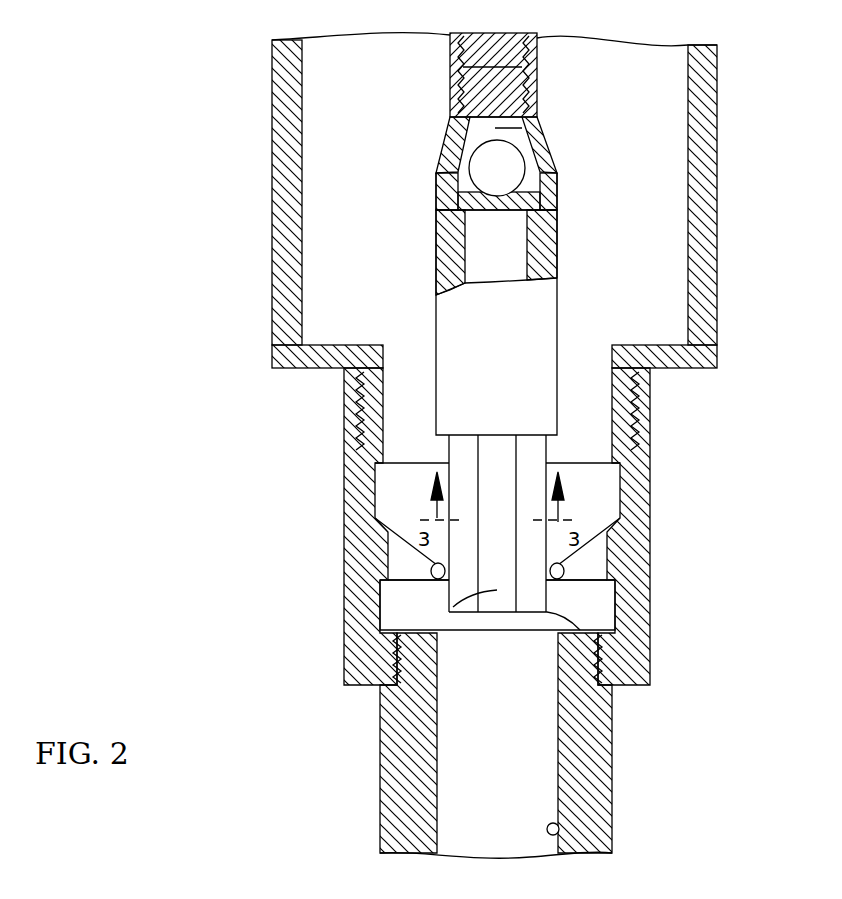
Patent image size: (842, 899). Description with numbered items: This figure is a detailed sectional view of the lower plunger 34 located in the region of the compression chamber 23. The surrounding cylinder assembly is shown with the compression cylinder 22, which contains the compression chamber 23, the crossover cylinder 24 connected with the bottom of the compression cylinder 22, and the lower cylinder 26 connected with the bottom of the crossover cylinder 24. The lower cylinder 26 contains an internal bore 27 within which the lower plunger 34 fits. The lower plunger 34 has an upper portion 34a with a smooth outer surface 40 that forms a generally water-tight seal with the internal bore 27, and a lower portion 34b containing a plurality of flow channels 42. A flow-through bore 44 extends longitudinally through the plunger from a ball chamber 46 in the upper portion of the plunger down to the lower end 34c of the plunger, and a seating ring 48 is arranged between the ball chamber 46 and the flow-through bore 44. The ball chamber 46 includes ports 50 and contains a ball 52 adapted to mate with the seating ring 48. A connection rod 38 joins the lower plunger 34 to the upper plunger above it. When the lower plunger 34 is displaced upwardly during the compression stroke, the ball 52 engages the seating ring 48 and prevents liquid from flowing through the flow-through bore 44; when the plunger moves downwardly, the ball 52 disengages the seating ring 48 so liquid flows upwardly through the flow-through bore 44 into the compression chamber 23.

The compression cylinder 22 is at (705, 248).
The compression chamber 23 is at (360, 184).
The crossover cylinder 24 is at (633, 496).
The lower cylinder 26 is at (600, 773).
The internal bore 27 is at (552, 818).
The lower plunger 34 is at (497, 383).
The upper portion 34a is at (436, 318).
The lower portion 34b is at (449, 456).
The lower end 34c is at (600, 655).
The connection rod 38 is at (537, 68).
The smooth outer surface 40 is at (465, 380).
The flow channels 42 is at (449, 612).
The flow-through bore 44 is at (492, 257).
The ball chamber 46 is at (540, 120).
The seating ring 48 is at (553, 197).
The ports 50 is at (457, 142).
The ball 52 is at (498, 167).